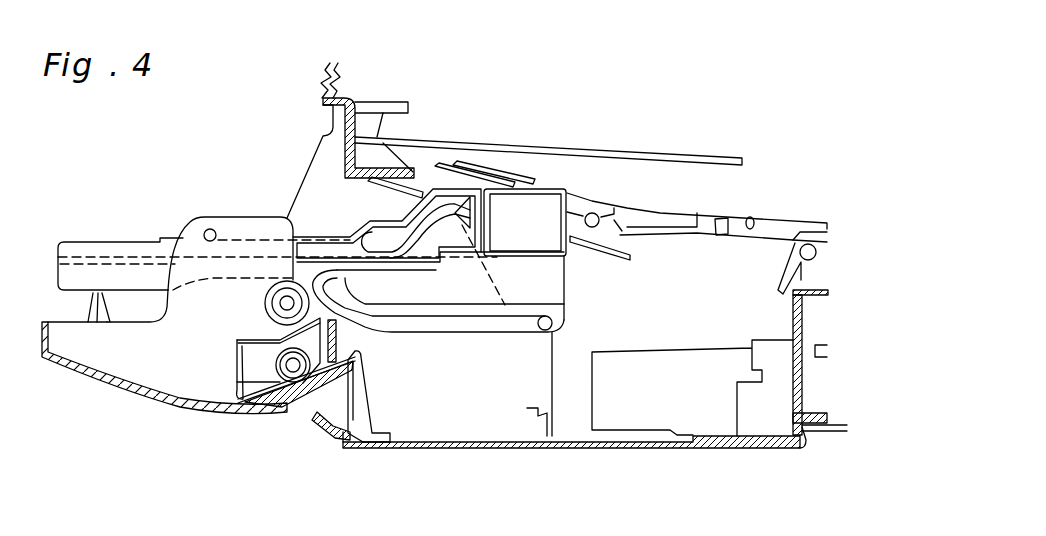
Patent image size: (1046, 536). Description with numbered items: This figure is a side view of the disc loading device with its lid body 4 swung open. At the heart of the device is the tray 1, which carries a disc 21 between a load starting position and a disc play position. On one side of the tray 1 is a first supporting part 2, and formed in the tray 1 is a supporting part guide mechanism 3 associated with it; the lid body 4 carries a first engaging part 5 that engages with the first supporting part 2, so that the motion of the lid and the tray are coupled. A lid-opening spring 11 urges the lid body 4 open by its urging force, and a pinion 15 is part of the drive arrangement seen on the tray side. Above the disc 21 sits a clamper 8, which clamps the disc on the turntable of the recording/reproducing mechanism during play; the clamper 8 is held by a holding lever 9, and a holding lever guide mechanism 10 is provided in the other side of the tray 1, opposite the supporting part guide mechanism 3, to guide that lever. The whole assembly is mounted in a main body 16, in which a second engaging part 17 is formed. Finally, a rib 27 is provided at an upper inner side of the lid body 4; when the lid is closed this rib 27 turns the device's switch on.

The tray 1 is at (89, 267).
The disc 21 is at (132, 255).
The first supporting part 2 is at (217, 218).
The first engaging part 5 is at (206, 231).
The rib 27 is at (90, 310).
The lid body 4 is at (142, 390).
The pinion 15 is at (273, 303).
The lid-opening spring 11 is at (287, 397).
The holding lever guide mechanism 10 is at (392, 250).
The clamper 8 is at (412, 192).
The holding lever 9 is at (625, 217).
The supporting part guide mechanism 3 is at (430, 325).
The second engaging part 17 is at (550, 328).
The main body 16 is at (397, 450).